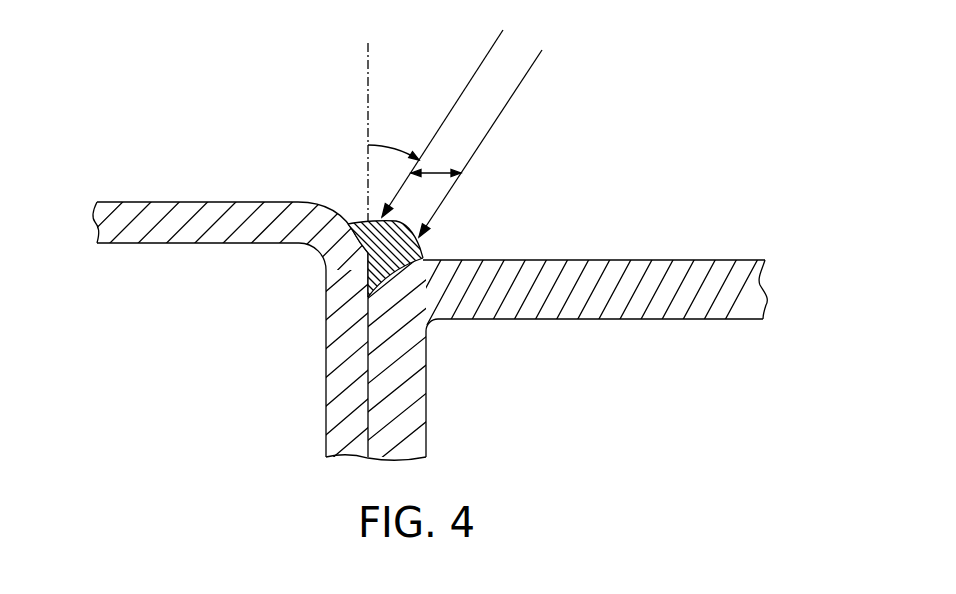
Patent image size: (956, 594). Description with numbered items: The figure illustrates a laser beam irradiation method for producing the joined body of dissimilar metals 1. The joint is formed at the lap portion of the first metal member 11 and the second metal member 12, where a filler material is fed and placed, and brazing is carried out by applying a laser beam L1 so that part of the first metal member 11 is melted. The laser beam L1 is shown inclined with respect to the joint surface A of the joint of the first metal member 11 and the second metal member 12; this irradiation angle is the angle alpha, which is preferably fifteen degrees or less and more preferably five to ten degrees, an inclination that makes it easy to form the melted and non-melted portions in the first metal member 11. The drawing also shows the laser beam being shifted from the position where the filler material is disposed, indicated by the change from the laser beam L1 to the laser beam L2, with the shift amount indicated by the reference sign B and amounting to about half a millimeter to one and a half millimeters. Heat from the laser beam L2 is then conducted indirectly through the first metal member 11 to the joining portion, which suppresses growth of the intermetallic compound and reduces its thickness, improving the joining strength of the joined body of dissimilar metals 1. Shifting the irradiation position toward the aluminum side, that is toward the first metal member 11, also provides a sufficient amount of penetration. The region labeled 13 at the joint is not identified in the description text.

The joined body of dissimilar metals 1 is at (722, 125).
The first metal member 11 is at (633, 320).
The second metal member 12 is at (227, 244).
The weld bead 13 is at (418, 246).
The joint surface A is at (367, 62).
The laser beam L1 is at (463, 92).
The laser beam L2 is at (508, 102).
The shift amount of the laser beam B is at (442, 173).
The inclined angle alpha is at (393, 142).